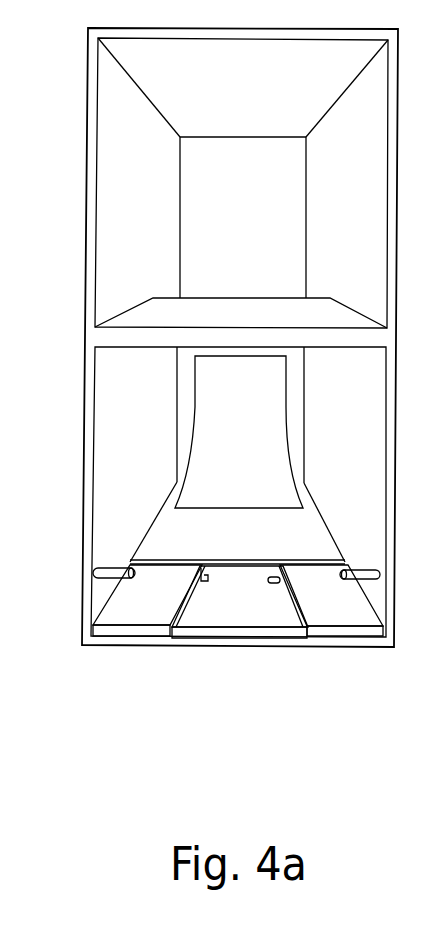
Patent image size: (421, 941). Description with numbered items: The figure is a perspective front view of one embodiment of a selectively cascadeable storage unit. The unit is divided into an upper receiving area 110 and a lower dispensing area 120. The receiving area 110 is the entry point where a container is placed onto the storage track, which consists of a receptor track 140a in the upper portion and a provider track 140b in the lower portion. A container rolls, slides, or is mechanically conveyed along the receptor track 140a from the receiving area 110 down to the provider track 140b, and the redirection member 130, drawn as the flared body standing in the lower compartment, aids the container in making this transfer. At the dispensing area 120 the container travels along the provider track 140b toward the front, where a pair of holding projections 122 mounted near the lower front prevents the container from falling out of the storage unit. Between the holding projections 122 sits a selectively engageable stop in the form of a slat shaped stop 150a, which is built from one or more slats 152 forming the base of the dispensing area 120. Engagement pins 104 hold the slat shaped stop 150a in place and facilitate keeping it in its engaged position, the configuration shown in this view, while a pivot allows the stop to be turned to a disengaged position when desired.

The receiving area 110 is at (118, 247).
The dispensing area 120 is at (108, 503).
The redirection member 130 is at (285, 427).
The receptor track 140a is at (243, 310).
The provider track 140b is at (158, 535).
The engagement pins 104 is at (203, 563).
The slat shaped stop 150a is at (300, 597).
The holding projections 122 is at (93, 573).
The slats 152 is at (140, 637).